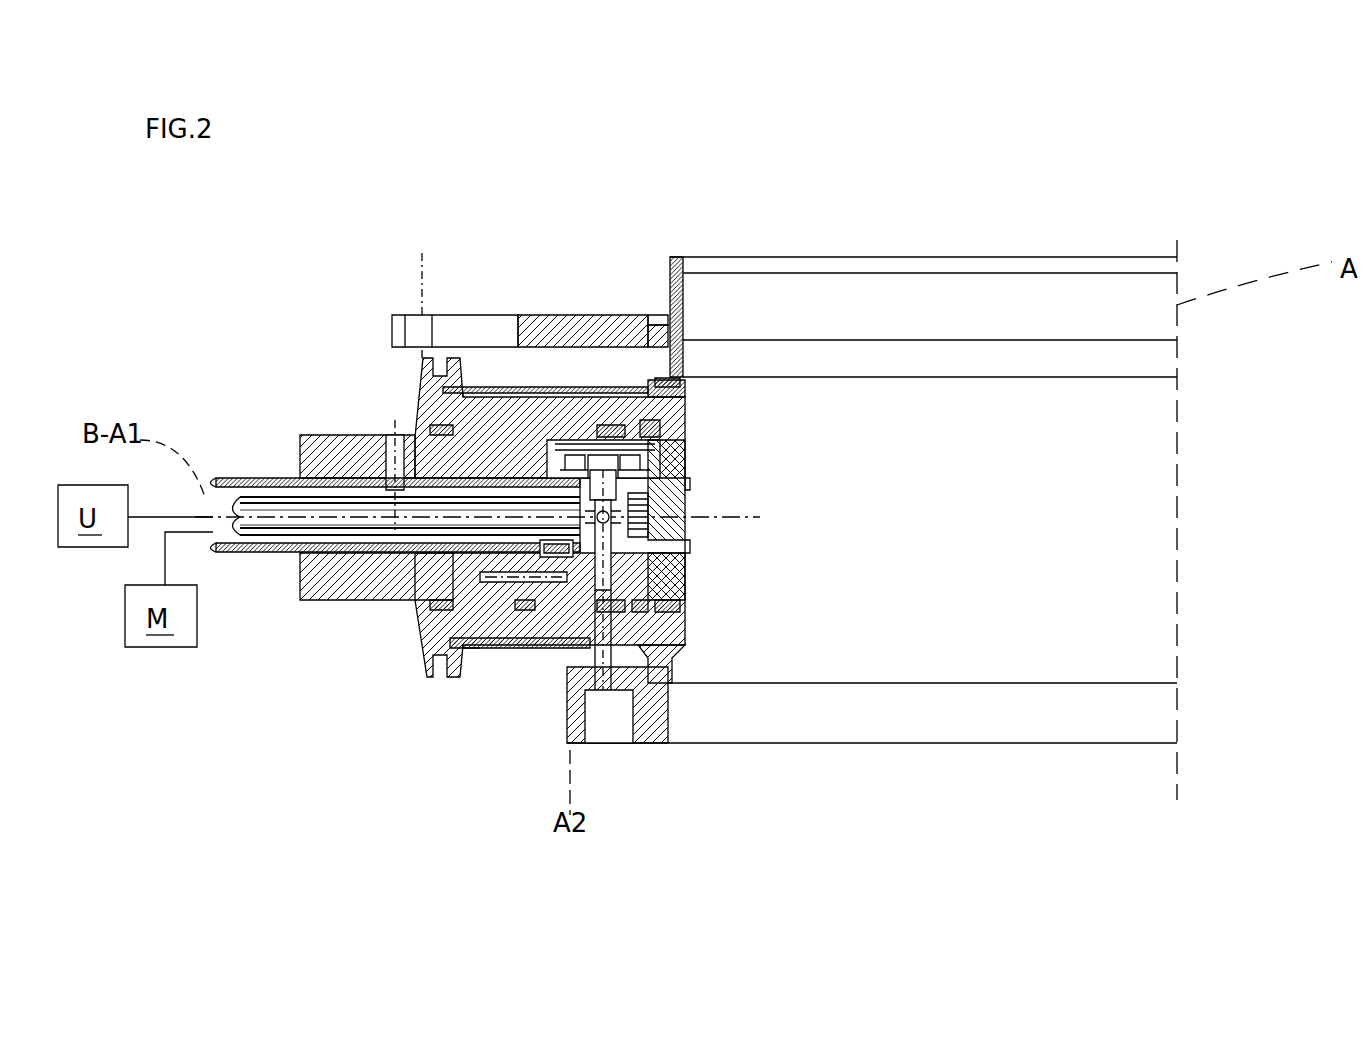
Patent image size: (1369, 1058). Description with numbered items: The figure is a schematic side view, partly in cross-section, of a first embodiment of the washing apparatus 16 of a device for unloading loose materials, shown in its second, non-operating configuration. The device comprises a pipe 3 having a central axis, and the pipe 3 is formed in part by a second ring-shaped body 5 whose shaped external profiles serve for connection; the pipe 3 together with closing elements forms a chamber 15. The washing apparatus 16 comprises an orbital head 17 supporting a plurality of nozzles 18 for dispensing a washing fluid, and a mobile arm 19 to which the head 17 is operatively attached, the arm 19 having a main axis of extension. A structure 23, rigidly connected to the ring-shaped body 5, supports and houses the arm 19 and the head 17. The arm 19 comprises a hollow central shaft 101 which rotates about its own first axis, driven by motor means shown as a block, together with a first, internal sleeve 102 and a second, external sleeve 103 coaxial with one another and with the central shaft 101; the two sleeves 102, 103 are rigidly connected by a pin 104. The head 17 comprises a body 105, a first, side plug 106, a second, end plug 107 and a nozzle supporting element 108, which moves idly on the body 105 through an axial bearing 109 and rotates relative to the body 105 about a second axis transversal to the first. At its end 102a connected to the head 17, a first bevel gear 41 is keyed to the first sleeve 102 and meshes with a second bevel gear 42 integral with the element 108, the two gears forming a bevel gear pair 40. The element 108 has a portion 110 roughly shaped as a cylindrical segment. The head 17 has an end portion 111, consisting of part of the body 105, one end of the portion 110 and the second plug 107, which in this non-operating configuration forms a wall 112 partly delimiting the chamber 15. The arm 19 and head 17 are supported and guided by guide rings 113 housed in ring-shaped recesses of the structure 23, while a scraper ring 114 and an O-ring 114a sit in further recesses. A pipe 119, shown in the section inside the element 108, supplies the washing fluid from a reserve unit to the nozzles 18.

The pipe 3 is at (1100, 410).
The second ring-shaped body 5 is at (675, 668).
The chamber 15 is at (1095, 520).
The washing apparatus 16 is at (737, 592).
The orbital head 17 is at (690, 470).
The nozzles 18 is at (432, 425).
The mobile arm 19 is at (358, 610).
The structure 23 is at (692, 632).
The bevel gear pair 40 is at (563, 575).
The first bevel gear 41 is at (585, 455).
The second bevel gear 42 is at (692, 547).
The hollow central shaft 101 is at (300, 560).
The first, internal sleeve 102 is at (235, 478).
The end of the first sleeve 102a is at (508, 470).
The second, external sleeve 103 is at (300, 437).
The pin 104 is at (390, 438).
The body 105 is at (397, 540).
The first, side plug 106 is at (555, 450).
The second, end plug 107 is at (690, 490).
The nozzle supporting element 108 is at (636, 675).
The axial bearing 109 is at (628, 440).
The portion 110 is at (687, 593).
The end portion 111 is at (690, 483).
The wall 112 is at (692, 527).
The guide rings 113 is at (440, 405).
The scraper ring 114 is at (688, 445).
The O-ring 114a is at (650, 440).
The pipe 119 is at (615, 665).